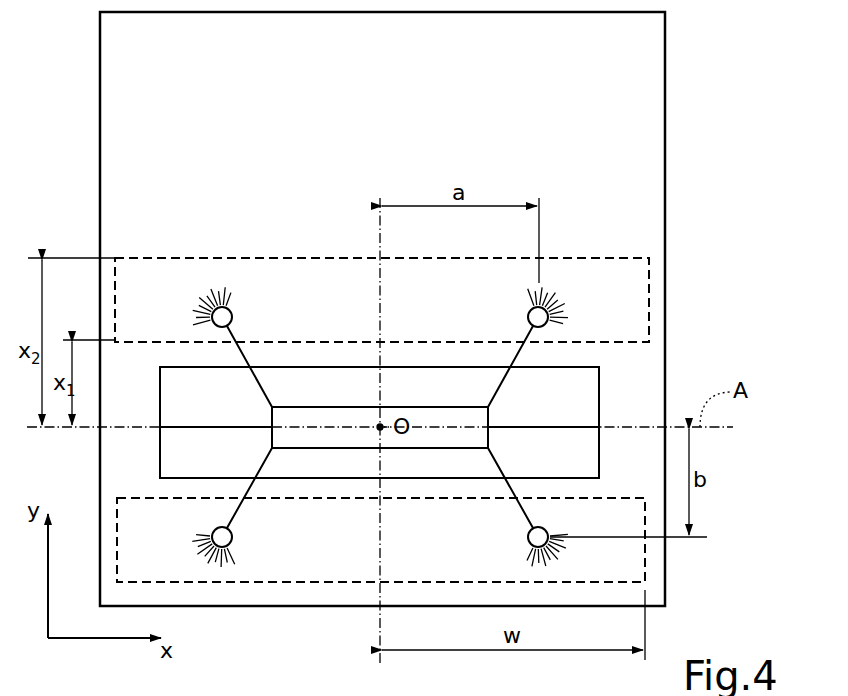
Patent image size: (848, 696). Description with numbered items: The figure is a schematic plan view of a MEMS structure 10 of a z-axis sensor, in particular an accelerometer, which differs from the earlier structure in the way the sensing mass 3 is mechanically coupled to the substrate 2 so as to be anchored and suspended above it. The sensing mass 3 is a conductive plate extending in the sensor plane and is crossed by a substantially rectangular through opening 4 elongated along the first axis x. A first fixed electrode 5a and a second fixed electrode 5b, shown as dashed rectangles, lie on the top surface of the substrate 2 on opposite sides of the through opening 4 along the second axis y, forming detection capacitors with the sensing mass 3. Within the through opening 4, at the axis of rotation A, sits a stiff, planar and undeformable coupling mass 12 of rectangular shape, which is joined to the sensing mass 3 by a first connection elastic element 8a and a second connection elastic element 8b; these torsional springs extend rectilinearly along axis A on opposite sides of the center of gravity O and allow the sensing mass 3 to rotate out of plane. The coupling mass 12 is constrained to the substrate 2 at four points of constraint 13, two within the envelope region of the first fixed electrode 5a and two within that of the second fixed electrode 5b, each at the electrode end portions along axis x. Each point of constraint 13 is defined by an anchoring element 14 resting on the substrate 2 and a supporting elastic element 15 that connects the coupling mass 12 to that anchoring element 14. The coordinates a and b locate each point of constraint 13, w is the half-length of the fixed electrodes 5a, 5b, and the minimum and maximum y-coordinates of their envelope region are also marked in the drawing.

The substrate 2 is at (580, 466).
The sensing mass 3 is at (97, 136).
The through opening 4 is at (596, 420).
The first fixed electrode 5a is at (648, 290).
The second fixed electrode 5b is at (633, 565).
The first connection elastic element 8a is at (207, 427).
The second connection elastic element 8b is at (523, 427).
The MEMS structure 10 is at (695, 158).
The coupling mass 12 is at (330, 422).
The point of constraint 13 is at (246, 312).
The anchoring element 14 is at (212, 317).
The supporting elastic element 15 is at (256, 381).